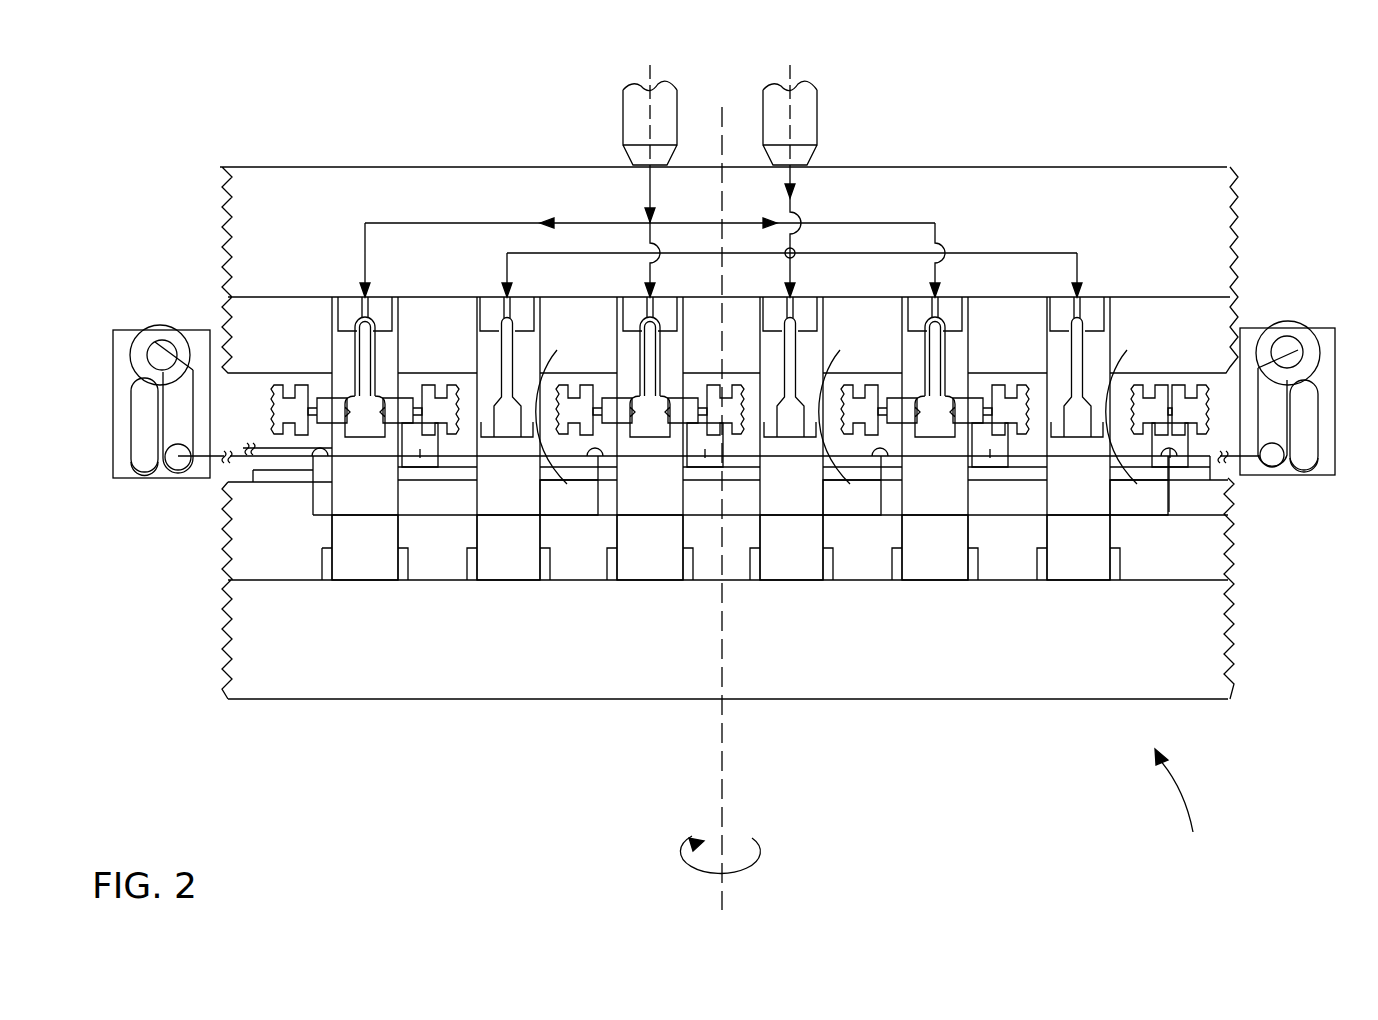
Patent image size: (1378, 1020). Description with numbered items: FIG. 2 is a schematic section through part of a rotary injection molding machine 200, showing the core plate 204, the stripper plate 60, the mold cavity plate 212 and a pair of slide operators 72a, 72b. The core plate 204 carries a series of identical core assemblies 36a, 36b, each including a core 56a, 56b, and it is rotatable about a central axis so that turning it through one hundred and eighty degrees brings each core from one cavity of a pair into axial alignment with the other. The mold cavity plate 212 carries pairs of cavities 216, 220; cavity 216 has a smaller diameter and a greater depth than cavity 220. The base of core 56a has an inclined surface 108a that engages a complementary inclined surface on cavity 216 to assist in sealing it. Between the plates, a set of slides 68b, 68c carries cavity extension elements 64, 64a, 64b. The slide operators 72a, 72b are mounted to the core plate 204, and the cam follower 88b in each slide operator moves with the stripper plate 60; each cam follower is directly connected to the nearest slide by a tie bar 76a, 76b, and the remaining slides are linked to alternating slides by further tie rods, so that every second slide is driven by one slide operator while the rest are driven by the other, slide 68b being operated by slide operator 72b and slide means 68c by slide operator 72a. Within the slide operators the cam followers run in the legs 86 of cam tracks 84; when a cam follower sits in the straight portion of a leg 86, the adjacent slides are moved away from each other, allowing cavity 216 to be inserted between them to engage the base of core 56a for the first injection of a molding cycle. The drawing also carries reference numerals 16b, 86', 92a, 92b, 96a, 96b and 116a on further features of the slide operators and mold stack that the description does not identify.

The spacer block 16b is at (425, 517).
The core assembly 36a is at (529, 558).
The core assembly 36b is at (387, 558).
The core 56a is at (505, 423).
The core 56b is at (363, 423).
The stripper plate 60 is at (313, 571).
The cavity extension element 64 is at (306, 425).
The cavity extension element 64a is at (438, 403).
The cavity extension element 64b is at (327, 410).
The slide 68b is at (315, 437).
The slide means 68c is at (437, 450).
The slide operator 72a is at (1253, 325).
The slide operator 72b is at (123, 328).
The tie bar 76a is at (243, 445).
The tie bar 76b is at (280, 458).
The cam track 84 is at (137, 480).
The leg 86 is at (730, 411).
The slot 86' is at (724, 446).
The cam follower 88b is at (183, 470).
The ring 92a is at (1275, 323).
The ring 92b is at (152, 325).
The bore 96a is at (1295, 355).
The bore 96b is at (168, 357).
The inclined surface 108a is at (854, 485).
The conduit 116a is at (845, 404).
The molding machine 200 is at (1183, 806).
The core plate 204 is at (954, 668).
The mold cavity plate 212 is at (587, 305).
The cavity 216 is at (537, 307).
The cavity 220 is at (390, 337).